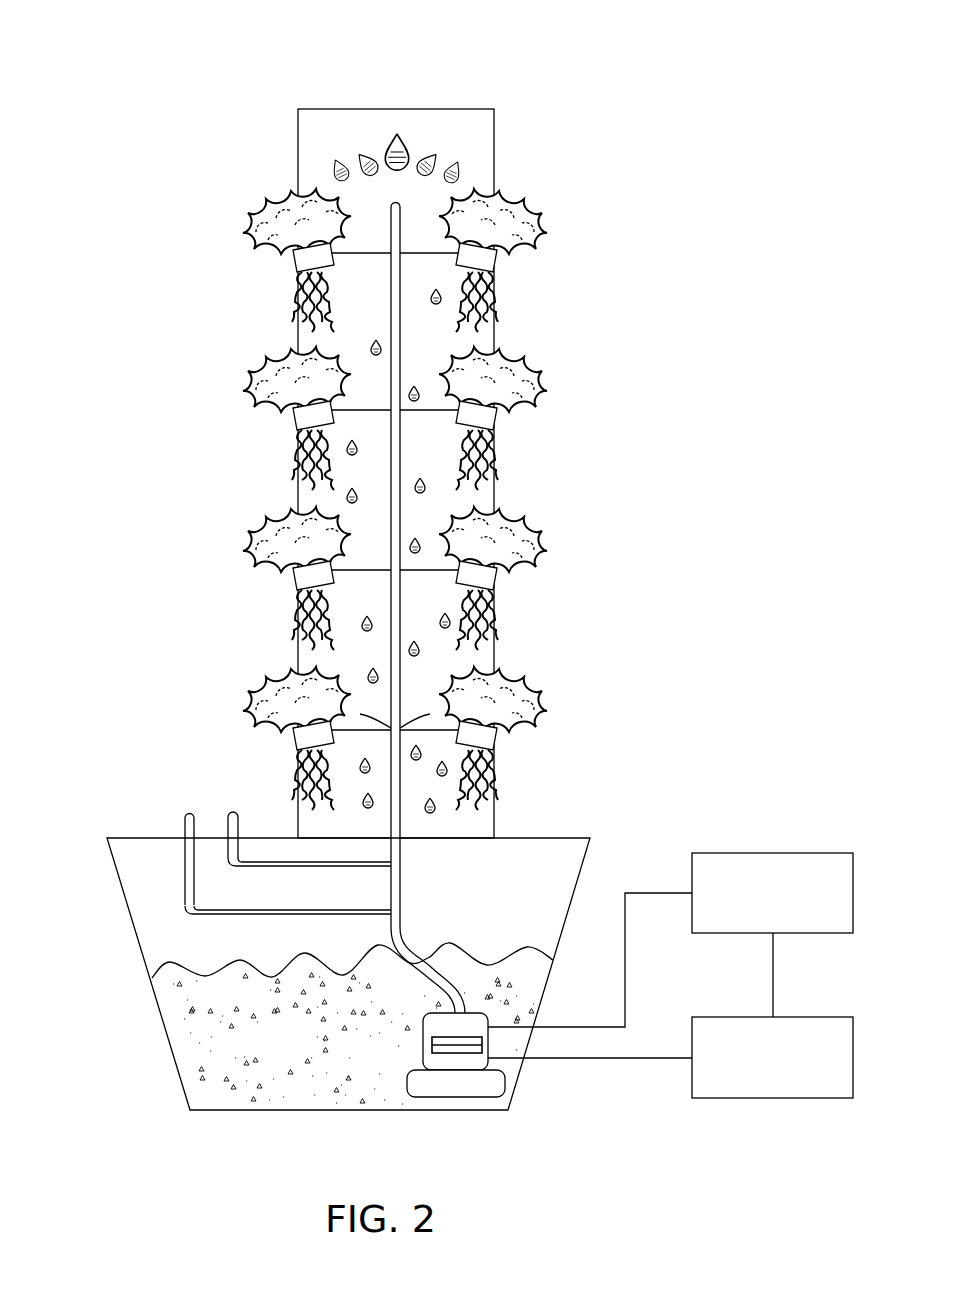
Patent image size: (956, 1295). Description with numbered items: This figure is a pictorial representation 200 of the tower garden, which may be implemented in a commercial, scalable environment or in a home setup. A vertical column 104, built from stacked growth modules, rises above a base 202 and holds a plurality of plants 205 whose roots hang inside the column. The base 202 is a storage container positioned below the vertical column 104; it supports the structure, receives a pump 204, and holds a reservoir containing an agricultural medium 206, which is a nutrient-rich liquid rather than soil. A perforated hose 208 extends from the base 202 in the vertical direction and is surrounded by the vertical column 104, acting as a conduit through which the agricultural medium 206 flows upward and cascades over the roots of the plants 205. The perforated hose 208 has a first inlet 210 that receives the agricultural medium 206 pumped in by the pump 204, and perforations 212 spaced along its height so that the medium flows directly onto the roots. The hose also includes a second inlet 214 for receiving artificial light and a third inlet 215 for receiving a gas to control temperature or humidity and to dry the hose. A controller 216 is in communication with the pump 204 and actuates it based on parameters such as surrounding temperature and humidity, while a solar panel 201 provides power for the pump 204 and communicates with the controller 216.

The pictorial representation 200 is at (165, 63).
The vertical column 104 is at (494, 130).
The perforated hose 208 is at (400, 211).
The plants 205 is at (540, 386).
The perforations 212 is at (391, 728).
The second inlet 214 is at (233, 812).
The third inlet 215 is at (187, 813).
The base 202 is at (108, 858).
The agricultural medium 206 is at (180, 1033).
The first inlet 210 is at (445, 990).
The pump 204 is at (505, 1083).
The controller 216 is at (772, 893).
The solar panel 201 is at (772, 1057).